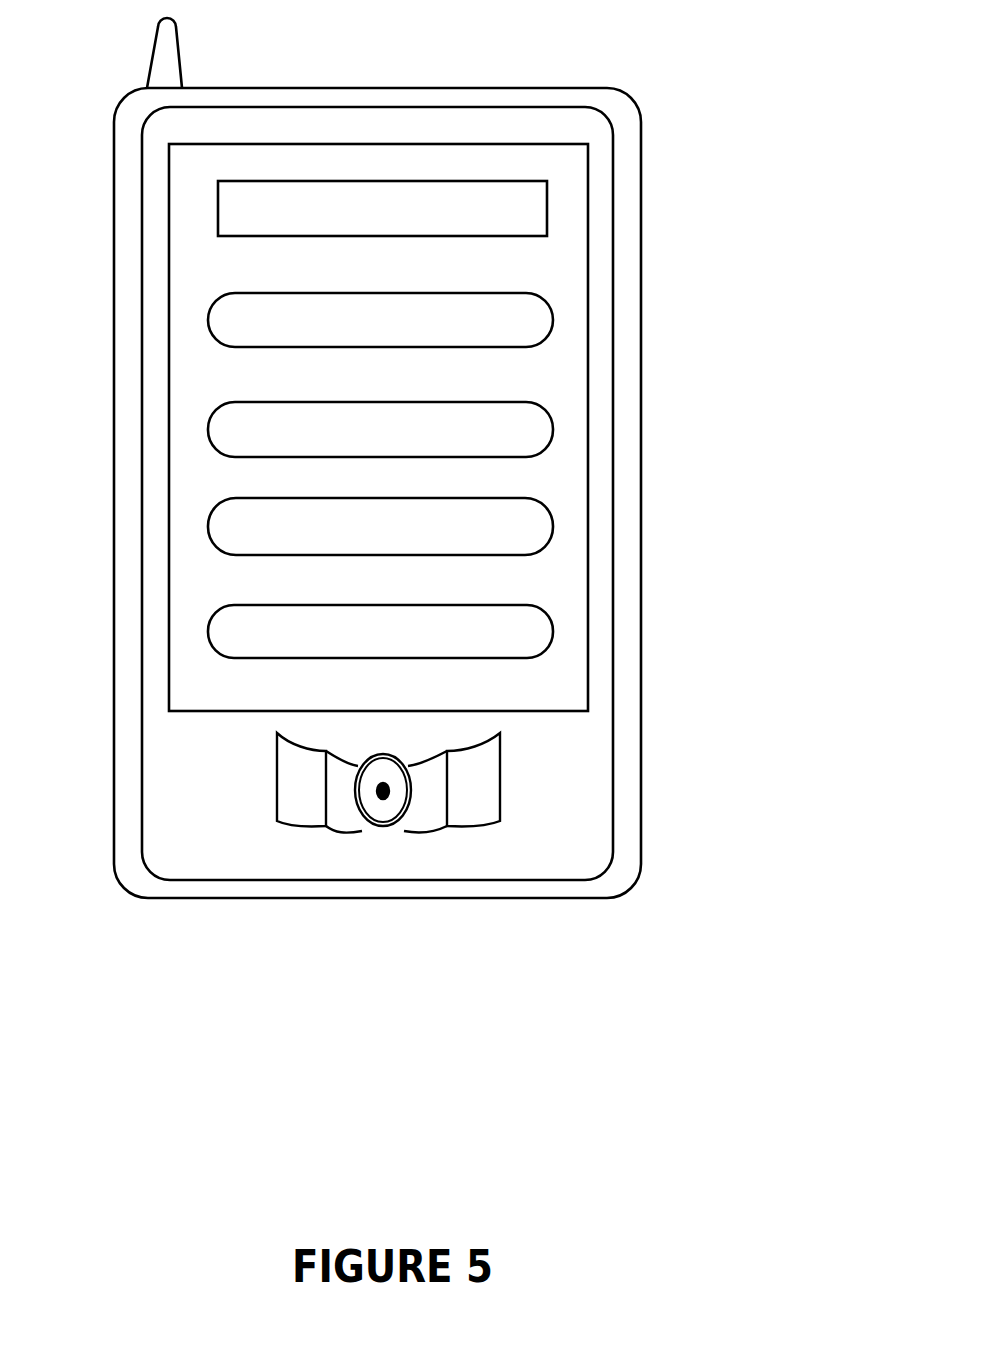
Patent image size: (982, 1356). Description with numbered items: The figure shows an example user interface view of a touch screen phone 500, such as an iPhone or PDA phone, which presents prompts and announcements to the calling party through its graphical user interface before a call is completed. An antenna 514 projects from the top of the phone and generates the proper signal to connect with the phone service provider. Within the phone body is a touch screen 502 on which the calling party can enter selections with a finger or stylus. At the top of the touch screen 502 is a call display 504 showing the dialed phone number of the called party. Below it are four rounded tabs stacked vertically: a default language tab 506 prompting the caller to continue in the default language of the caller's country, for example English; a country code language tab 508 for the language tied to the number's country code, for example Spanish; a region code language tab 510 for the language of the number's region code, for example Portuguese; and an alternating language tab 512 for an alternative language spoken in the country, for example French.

The touch screen phone 500 is at (277, 958).
The touch screen 502 is at (567, 692).
The call display 504 is at (537, 208).
The default language tab 506 is at (540, 317).
The country code language tab 508 is at (540, 427).
The region code language tab 510 is at (540, 523).
The alternating language tab 512 is at (540, 628).
The antenna 514 is at (166, 34).